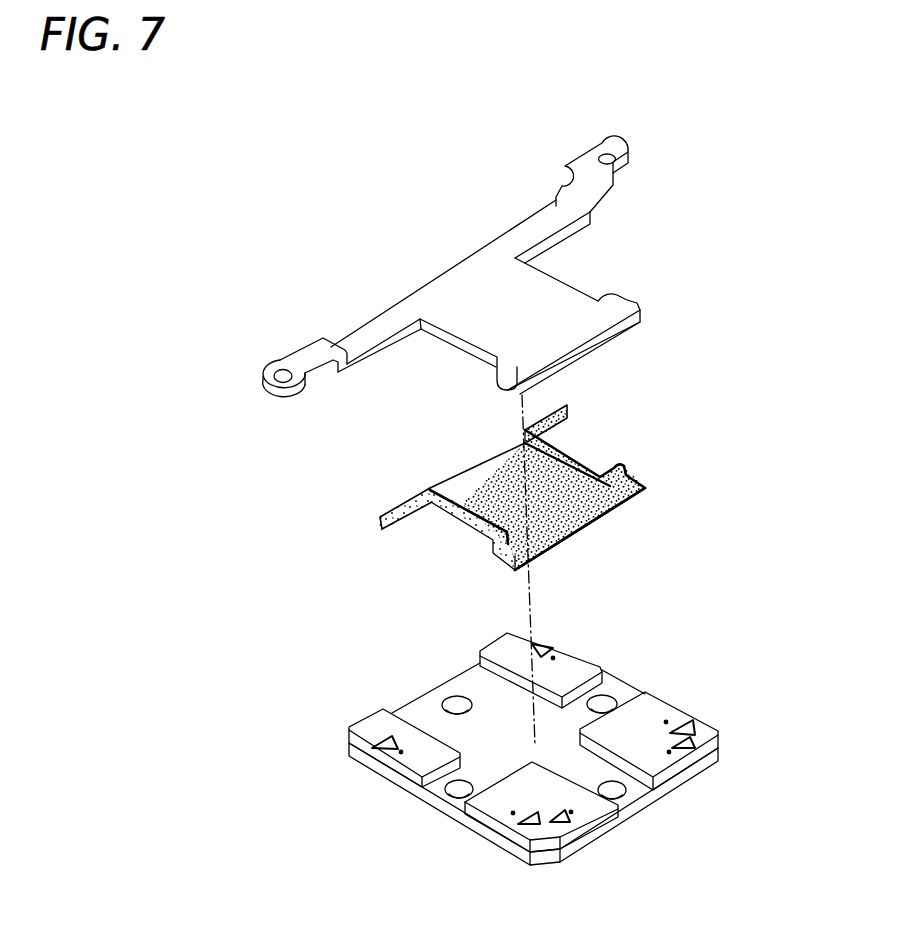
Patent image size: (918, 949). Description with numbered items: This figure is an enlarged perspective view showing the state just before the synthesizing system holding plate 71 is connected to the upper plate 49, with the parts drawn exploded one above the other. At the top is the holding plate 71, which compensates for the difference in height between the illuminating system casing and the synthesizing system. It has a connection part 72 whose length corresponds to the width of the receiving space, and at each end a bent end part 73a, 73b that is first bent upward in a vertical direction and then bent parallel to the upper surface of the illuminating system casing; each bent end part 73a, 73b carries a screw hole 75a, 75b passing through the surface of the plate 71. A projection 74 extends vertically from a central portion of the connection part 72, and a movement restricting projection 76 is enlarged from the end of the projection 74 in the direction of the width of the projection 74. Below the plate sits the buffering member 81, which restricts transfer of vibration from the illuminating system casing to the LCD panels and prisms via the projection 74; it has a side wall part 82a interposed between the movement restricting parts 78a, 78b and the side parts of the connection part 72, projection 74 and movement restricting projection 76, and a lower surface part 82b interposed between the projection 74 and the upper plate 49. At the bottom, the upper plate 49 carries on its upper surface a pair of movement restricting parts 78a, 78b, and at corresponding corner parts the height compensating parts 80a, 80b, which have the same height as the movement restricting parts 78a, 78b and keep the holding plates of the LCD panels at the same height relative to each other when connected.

The synthesizing system holding plate 71 is at (367, 285).
The connection part 72 is at (523, 236).
The bent end part 73a is at (308, 347).
The bent end part 73b is at (582, 165).
The projection 74 is at (563, 293).
The screw hole 75a is at (277, 384).
The screw hole 75b is at (615, 163).
The movement restricting projection 76 is at (638, 306).
The buffering member 81 is at (665, 494).
The side wall part 82a is at (569, 413).
The lower surface part 82b is at (590, 522).
The upper plate 49 is at (437, 825).
The movement restricting part 78a is at (392, 760).
The movement restricting part 78b is at (588, 660).
The height compensating part 80a is at (524, 835).
The height compensating part 80b is at (682, 713).